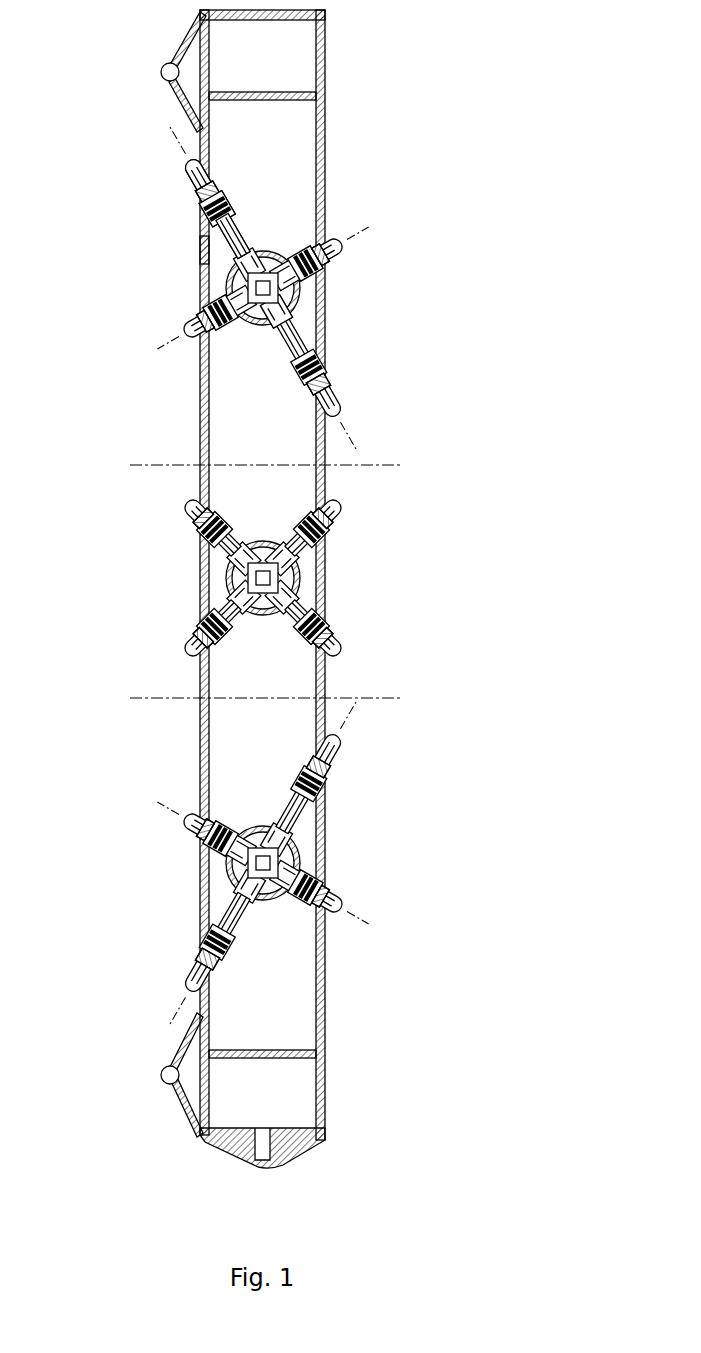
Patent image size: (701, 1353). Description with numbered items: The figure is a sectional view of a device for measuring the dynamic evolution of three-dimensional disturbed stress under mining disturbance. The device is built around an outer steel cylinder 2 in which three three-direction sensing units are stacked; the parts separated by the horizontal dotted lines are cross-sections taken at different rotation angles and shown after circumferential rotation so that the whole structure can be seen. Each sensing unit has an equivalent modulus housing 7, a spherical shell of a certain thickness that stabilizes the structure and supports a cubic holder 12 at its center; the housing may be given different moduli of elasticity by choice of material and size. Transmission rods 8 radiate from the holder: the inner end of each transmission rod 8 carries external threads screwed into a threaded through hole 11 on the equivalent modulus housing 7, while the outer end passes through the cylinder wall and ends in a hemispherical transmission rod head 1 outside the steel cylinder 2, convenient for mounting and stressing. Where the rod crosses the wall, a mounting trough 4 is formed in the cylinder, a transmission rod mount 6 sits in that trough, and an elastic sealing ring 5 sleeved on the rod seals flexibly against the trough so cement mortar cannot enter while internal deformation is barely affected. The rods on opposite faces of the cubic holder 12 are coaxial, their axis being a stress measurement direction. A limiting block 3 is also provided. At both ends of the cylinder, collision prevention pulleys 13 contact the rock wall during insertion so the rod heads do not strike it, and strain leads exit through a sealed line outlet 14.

The transmission rod head 1 is at (196, 161).
The steel cylinder 2 is at (326, 128).
The limiting block 3 is at (237, 91).
The mounting trough 4 is at (211, 166).
The elastic sealing ring 5 is at (208, 212).
The transmission rod mount 6 is at (208, 250).
The equivalent modulus housing 7 is at (232, 281).
The transmission rod 8 is at (241, 235).
The threaded through hole 11 is at (288, 313).
The cubic holder 12 is at (284, 292).
The collision prevention pulley 13 is at (166, 1080).
The line outlet 14 is at (253, 1168).